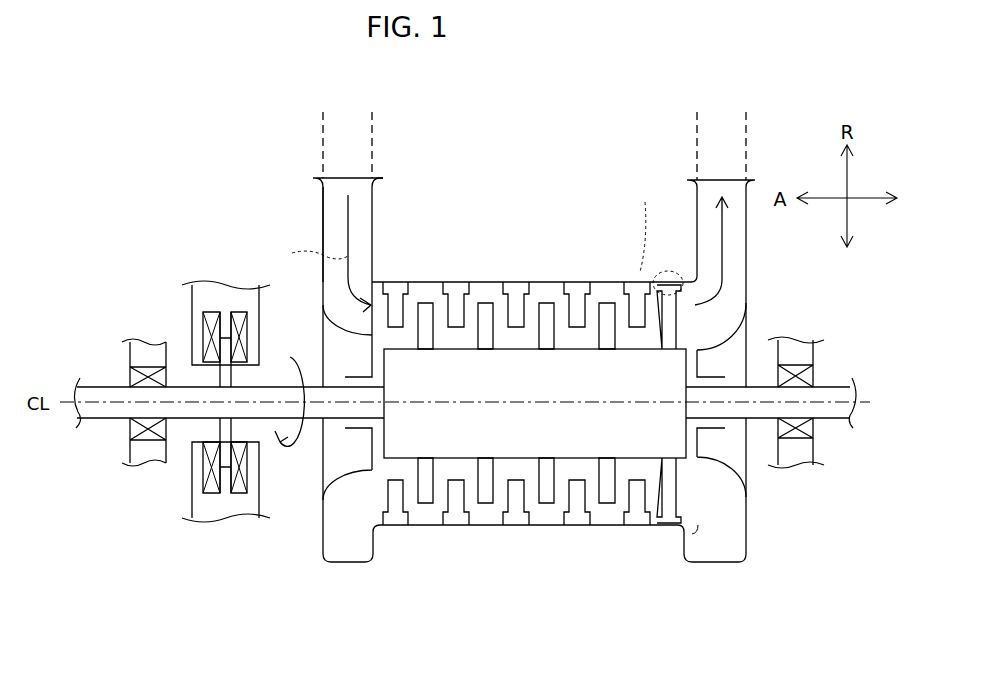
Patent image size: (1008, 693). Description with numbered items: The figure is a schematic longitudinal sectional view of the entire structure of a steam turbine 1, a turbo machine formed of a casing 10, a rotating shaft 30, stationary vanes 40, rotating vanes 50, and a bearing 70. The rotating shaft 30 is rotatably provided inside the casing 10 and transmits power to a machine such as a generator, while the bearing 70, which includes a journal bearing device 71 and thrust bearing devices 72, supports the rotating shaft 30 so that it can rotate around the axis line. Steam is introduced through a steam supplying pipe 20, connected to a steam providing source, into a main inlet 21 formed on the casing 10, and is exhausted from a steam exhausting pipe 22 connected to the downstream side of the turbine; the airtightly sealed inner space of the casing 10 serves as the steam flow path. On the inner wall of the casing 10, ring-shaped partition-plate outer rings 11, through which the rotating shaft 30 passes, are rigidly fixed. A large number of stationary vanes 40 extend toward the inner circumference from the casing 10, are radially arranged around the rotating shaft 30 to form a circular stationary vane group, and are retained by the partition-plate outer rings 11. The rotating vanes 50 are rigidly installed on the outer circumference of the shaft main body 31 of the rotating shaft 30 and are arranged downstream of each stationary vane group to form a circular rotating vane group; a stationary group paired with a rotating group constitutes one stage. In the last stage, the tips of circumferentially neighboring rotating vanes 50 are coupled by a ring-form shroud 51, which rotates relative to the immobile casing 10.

The steam turbine 1 is at (719, 580).
The casing 10 is at (346, 564).
The partition-plate outer ring 11 is at (640, 285).
The steam supplying pipe 20 is at (318, 137).
The main inlet 21 is at (323, 205).
The steam exhausting pipe 22 is at (692, 137).
The rotating shaft 30 is at (92, 384).
The shaft main body 31 is at (509, 446).
The stationary vane 40 is at (413, 296).
The rotating vane 50 is at (478, 296).
The shroud 51 is at (677, 285).
The bearing 70 is at (168, 211).
The journal bearing device 71 is at (143, 474).
The thrust bearing device 72 is at (218, 530).